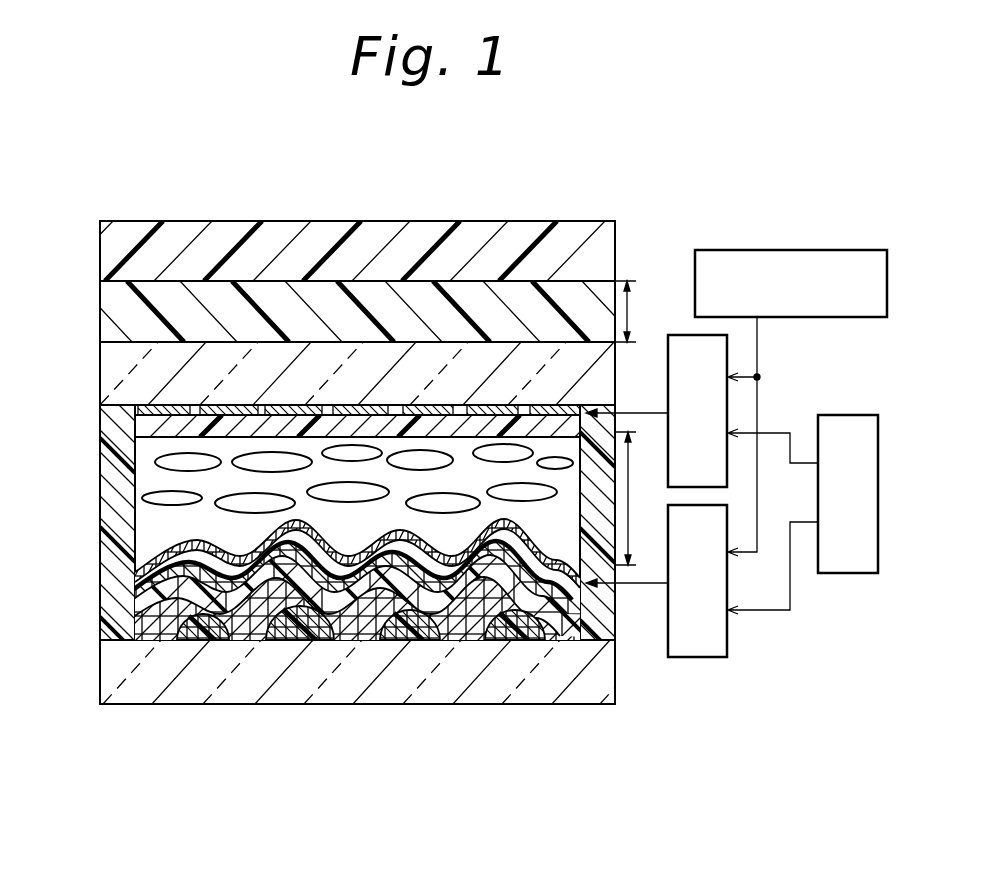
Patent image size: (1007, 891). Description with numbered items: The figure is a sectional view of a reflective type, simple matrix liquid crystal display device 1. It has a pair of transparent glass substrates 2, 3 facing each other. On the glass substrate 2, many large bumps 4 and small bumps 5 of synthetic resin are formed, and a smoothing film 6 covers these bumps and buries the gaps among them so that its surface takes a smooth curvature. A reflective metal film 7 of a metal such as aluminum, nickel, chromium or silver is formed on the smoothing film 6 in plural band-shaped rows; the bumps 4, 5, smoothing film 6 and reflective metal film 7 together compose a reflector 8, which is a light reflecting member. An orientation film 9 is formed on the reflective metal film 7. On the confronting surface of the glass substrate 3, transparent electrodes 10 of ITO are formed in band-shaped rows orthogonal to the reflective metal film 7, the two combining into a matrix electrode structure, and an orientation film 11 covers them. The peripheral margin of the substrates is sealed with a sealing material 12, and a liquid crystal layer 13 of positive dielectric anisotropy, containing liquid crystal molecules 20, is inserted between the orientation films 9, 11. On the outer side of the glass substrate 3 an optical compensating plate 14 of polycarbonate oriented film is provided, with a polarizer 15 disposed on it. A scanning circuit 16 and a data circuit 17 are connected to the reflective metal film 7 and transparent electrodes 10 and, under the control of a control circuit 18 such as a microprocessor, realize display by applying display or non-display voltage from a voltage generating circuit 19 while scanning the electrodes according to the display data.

The liquid crystal display device 1 is at (601, 185).
The glass substrate 2 is at (112, 678).
The glass substrate 3 is at (112, 382).
The large bumps 4 is at (307, 640).
The small bumps 5 is at (340, 670).
The smoothing film 6 is at (132, 612).
The reflective metal film 7 is at (132, 576).
The reflector 8 is at (346, 640).
The orientation film 9 is at (140, 568).
The transparent electrodes 10 is at (150, 408).
The orientation film 11 is at (140, 428).
The sealing material 12 is at (107, 515).
The liquid crystal layer 13 is at (463, 442).
The optical compensating plate 14 is at (125, 306).
The polarizer 15 is at (111, 262).
The scanning circuit 16 is at (697, 657).
The data circuit 17 is at (686, 336).
The control circuit 18 is at (856, 574).
The voltage generating circuit 19 is at (787, 250).
The liquid crystal molecule 20 is at (408, 505).